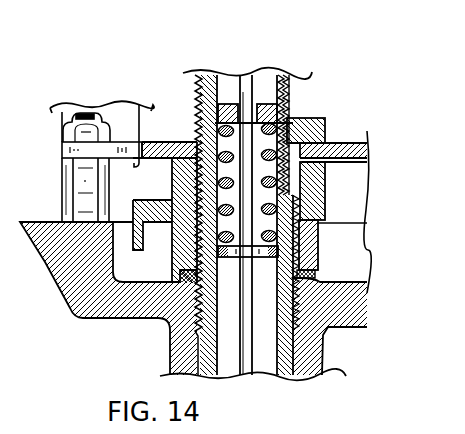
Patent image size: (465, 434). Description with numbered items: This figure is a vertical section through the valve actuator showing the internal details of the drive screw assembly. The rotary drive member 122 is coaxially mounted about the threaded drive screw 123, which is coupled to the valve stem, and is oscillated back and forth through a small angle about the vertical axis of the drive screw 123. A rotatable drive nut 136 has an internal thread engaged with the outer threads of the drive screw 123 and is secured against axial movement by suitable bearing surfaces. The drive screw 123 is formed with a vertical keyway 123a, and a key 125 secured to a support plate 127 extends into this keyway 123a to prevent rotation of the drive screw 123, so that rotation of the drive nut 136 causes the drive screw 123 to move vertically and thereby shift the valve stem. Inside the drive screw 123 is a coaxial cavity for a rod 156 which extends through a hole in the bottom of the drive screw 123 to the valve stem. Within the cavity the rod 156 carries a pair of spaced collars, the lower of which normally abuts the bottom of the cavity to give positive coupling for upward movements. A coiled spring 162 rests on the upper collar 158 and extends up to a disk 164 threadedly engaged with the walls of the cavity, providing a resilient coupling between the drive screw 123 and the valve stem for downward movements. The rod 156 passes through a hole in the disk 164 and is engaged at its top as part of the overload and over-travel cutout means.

The rotary drive member 122 is at (325, 202).
The drive screw 123 is at (205, 75).
The vertical keyway 123a is at (294, 73).
The key 125 is at (310, 119).
The support plate 127 is at (345, 143).
The rotatable drive nut 136 is at (318, 248).
The rod 156 is at (243, 352).
The upper collar 158 is at (262, 257).
The coiled spring 162 is at (325, 180).
The disk 164 is at (202, 117).